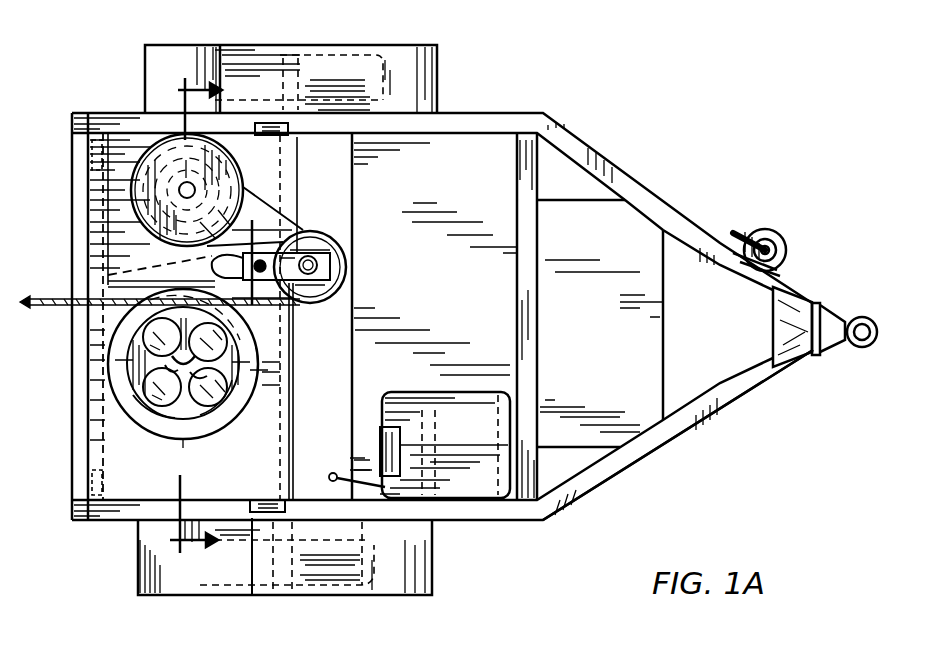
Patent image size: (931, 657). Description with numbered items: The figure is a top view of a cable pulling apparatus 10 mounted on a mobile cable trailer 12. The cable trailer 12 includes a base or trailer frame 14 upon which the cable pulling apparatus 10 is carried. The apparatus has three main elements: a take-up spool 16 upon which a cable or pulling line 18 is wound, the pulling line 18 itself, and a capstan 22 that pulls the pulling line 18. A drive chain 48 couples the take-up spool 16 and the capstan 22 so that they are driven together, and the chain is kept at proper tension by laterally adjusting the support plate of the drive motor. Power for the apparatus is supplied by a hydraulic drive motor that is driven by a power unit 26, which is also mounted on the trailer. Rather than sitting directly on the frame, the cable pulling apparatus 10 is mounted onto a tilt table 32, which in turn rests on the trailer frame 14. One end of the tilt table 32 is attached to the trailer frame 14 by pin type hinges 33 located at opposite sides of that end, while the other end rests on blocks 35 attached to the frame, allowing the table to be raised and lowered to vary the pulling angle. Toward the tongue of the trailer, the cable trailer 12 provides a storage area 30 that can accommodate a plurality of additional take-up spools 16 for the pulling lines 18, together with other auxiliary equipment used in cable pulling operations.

The cable pulling apparatus 10 is at (128, 445).
The mobile cable trailer 12 is at (628, 107).
The trailer frame 14 is at (596, 478).
The take-up spool 16 is at (125, 216).
The pulling line 18 is at (262, 302).
The capstan 22 is at (120, 385).
The power unit 26 is at (470, 405).
The storage area 30 is at (622, 380).
The tilt table 32 is at (110, 442).
The pin type hinges 33 is at (262, 122).
The blocks 35 is at (99, 112).
The drive chain 48 is at (108, 278).